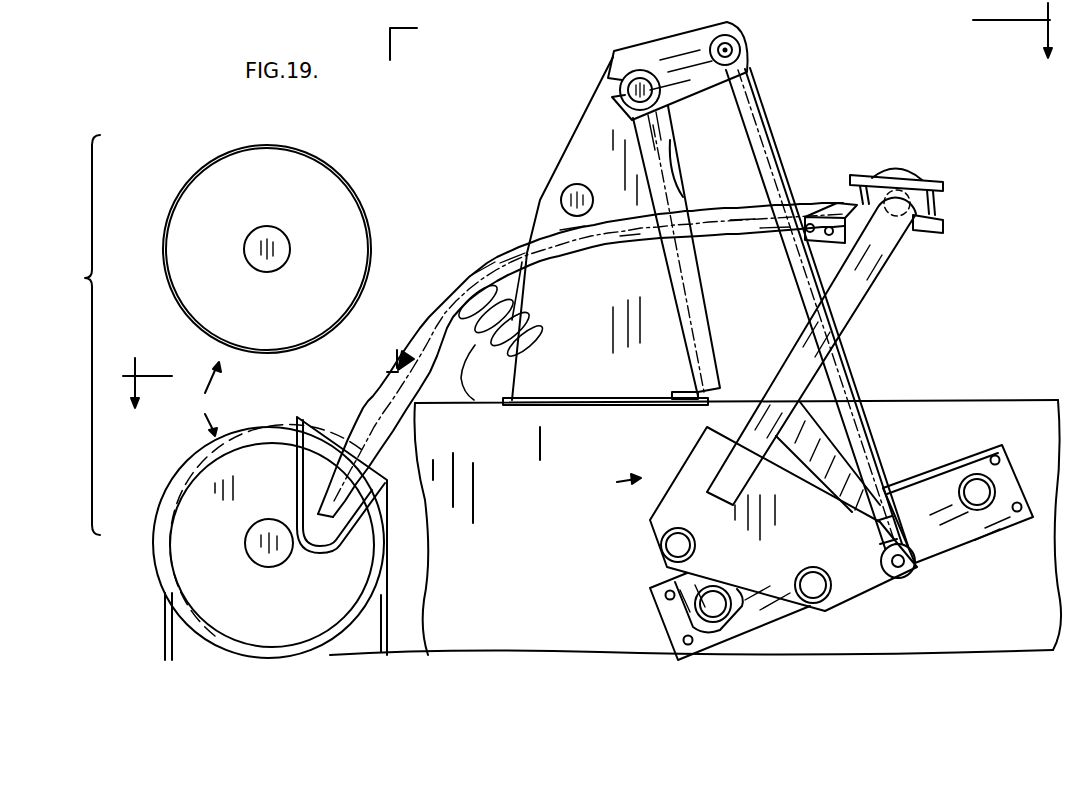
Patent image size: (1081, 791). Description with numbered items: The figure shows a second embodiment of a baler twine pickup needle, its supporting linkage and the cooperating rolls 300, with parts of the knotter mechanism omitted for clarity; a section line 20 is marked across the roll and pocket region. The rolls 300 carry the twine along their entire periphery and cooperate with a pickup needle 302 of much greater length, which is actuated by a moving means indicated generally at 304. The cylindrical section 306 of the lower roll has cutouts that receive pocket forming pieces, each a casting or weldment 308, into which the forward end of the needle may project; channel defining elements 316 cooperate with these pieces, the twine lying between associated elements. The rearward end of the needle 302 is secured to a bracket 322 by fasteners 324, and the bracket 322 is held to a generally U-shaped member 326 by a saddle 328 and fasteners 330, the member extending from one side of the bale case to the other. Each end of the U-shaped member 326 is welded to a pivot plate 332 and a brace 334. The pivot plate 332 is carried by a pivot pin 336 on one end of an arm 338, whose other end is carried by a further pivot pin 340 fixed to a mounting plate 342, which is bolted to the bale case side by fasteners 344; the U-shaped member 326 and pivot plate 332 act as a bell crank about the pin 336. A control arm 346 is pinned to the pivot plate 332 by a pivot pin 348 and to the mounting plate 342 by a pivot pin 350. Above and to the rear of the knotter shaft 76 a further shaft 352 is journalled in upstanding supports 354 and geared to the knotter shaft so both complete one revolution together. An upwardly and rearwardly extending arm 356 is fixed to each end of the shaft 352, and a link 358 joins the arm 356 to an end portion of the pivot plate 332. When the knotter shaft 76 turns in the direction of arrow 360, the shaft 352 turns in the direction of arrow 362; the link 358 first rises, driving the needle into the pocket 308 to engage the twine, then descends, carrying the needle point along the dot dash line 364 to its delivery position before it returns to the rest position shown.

The section line 20- 20 is at (587, 205).
The knotter shaft 76 is at (560, 200).
The rolls 300 is at (204, 399).
The pickup needle 302 is at (720, 214).
The moving means 304 is at (611, 482).
The cylindrical section of the lower roller 306 is at (164, 228).
The pocket forming piece 308 is at (326, 560).
The channel defining elements 316 is at (392, 588).
The bracket 322 is at (843, 205).
The fasteners 324 is at (828, 227).
The U-shaped member 326 is at (878, 277).
The saddle 328 is at (905, 173).
The fasteners 330 is at (947, 207).
The pivot plate 332 is at (650, 519).
The brace 334 is at (827, 460).
The pivot pin 336 is at (661, 548).
The arm 338 is at (700, 585).
The pivot pin 340 is at (729, 598).
The mounting plate 342 is at (710, 643).
The fasteners 344 is at (684, 638).
The control arm 346 is at (944, 525).
The pivot pin 348 is at (812, 572).
The pivot pin 350 is at (958, 482).
The rotatable shaft 352 is at (620, 93).
The upstanding supports 354 is at (683, 198).
The arm 356 is at (695, 82).
The link 358 is at (762, 110).
The arrow 360 is at (594, 171).
The arrow 362 is at (596, 75).
The dot dash line 364 is at (370, 397).